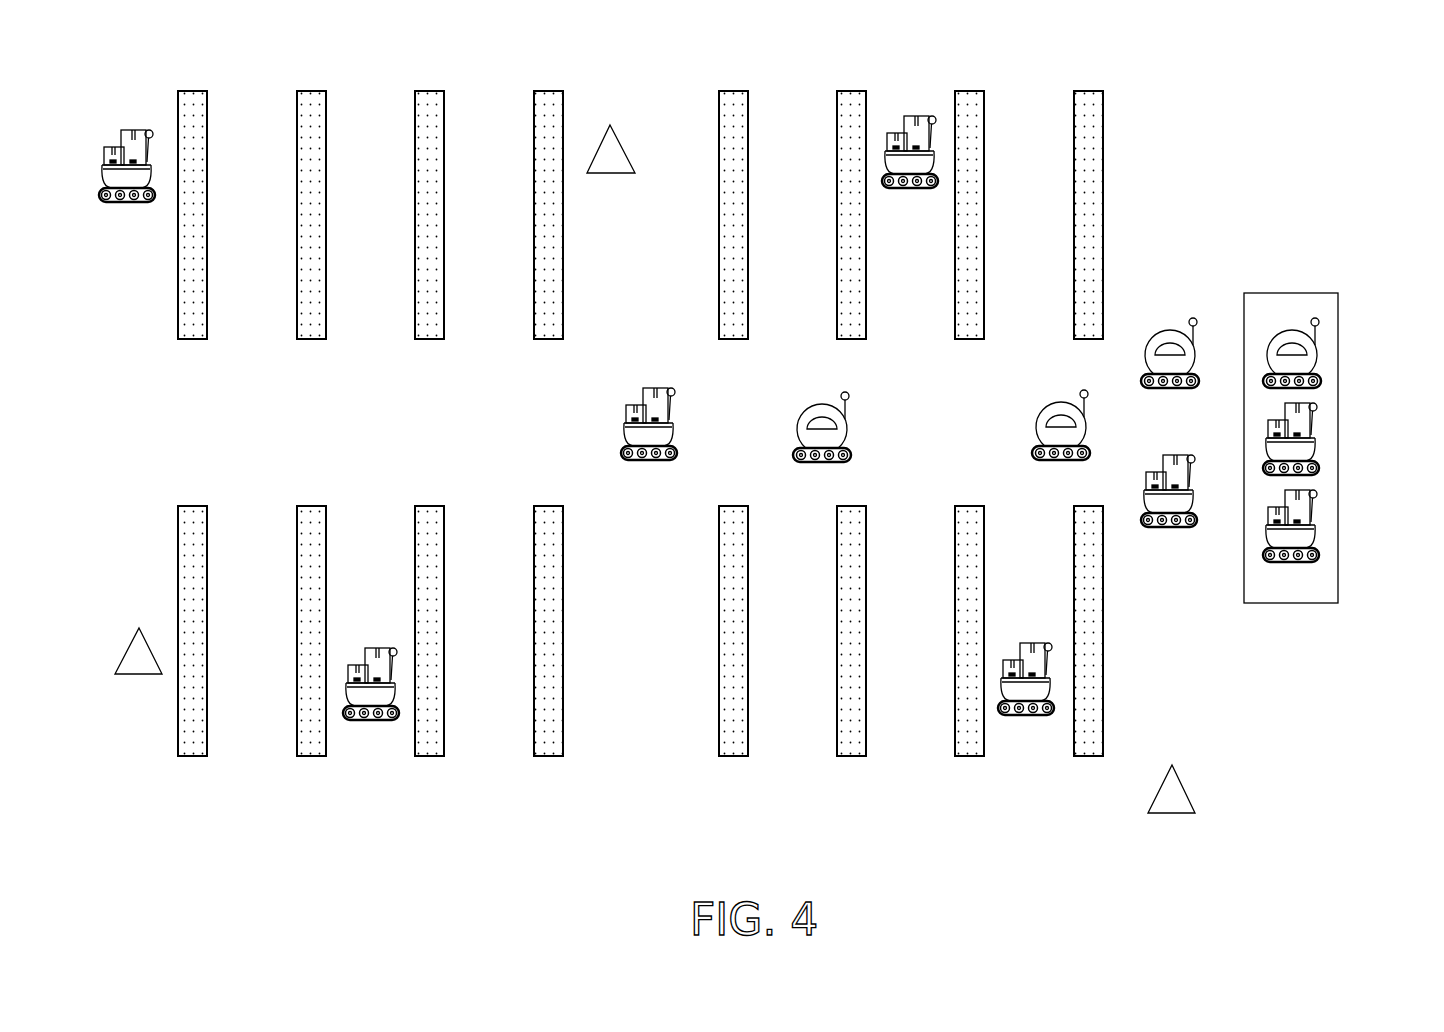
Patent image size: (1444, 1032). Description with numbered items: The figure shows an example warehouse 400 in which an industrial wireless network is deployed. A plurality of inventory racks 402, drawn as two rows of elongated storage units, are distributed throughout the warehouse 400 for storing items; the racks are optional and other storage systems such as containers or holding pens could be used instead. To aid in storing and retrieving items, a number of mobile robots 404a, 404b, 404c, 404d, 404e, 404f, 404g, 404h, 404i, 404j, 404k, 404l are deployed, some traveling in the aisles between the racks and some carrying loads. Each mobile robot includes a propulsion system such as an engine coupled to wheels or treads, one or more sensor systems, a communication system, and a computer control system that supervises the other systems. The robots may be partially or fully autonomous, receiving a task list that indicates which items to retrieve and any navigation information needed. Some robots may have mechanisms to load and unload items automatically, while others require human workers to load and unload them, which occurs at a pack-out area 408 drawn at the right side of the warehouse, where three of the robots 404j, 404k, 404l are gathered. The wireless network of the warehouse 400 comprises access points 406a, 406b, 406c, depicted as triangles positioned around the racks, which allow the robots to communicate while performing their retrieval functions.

The warehouse 400 is at (1294, 92).
The inventory racks 402 is at (1103, 73).
The mobile robot 404a is at (649, 460).
The mobile robot 404b is at (822, 462).
The mobile robot 404c is at (1060, 460).
The mobile robot 404d is at (1168, 388).
The mobile robot 404e is at (893, 188).
The mobile robot 404f is at (1004, 715).
The mobile robot 404g is at (111, 202).
The mobile robot 404h is at (352, 720).
The mobile robot 404i is at (1168, 527).
The mobile robot 404j is at (1313, 362).
The mobile robot 404k is at (1313, 444).
The mobile robot 404l is at (1312, 517).
The access point 406a is at (623, 148).
The access point 406b is at (158, 675).
The access point 406c is at (1183, 788).
The pack-out area 408 is at (1292, 293).